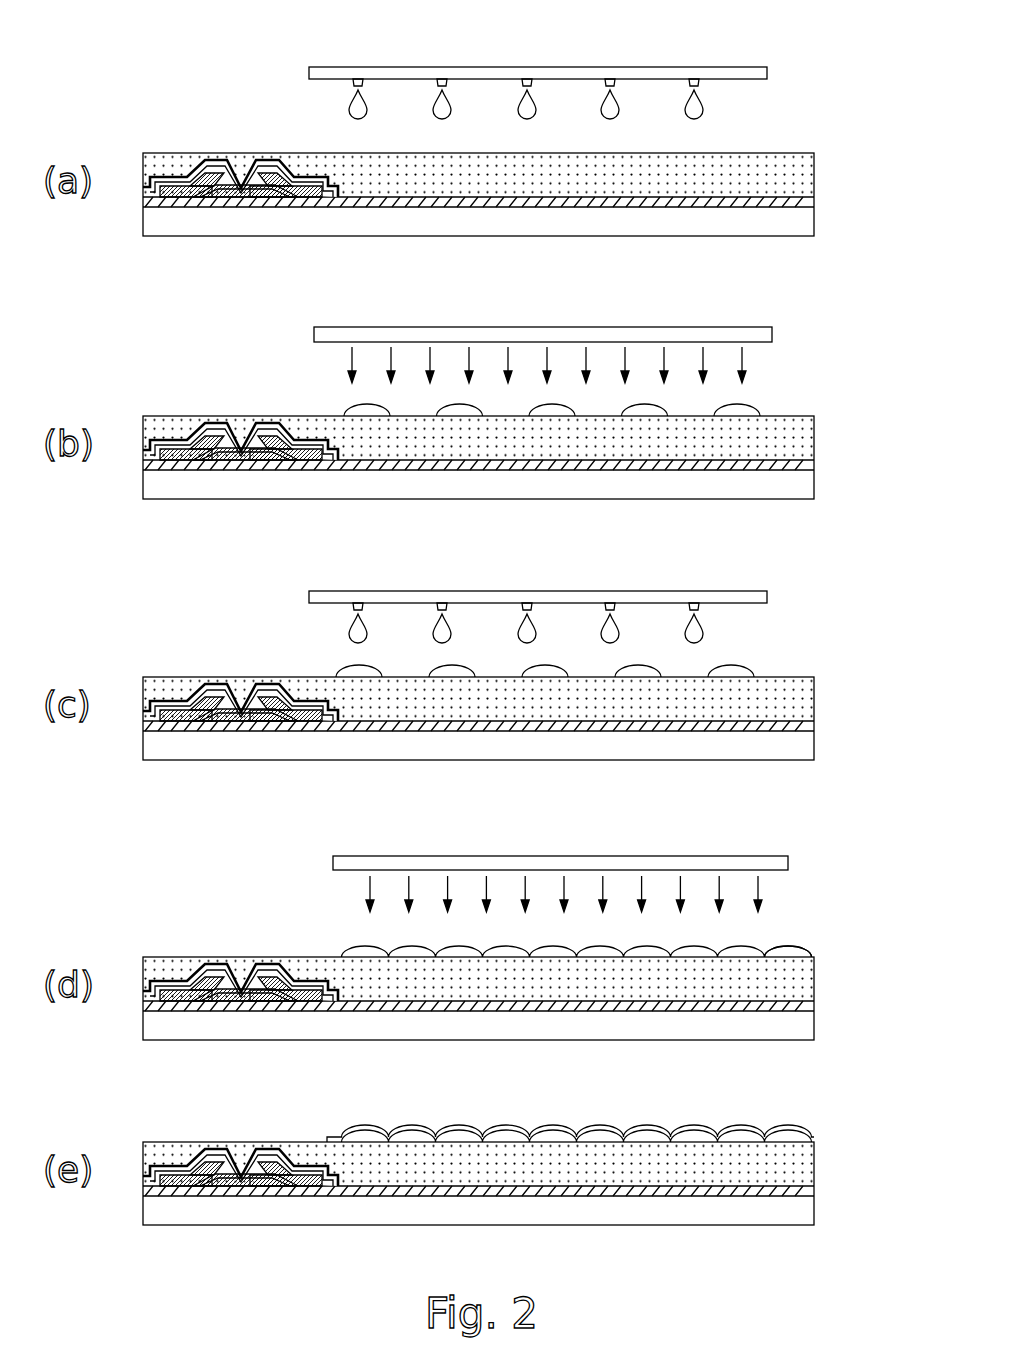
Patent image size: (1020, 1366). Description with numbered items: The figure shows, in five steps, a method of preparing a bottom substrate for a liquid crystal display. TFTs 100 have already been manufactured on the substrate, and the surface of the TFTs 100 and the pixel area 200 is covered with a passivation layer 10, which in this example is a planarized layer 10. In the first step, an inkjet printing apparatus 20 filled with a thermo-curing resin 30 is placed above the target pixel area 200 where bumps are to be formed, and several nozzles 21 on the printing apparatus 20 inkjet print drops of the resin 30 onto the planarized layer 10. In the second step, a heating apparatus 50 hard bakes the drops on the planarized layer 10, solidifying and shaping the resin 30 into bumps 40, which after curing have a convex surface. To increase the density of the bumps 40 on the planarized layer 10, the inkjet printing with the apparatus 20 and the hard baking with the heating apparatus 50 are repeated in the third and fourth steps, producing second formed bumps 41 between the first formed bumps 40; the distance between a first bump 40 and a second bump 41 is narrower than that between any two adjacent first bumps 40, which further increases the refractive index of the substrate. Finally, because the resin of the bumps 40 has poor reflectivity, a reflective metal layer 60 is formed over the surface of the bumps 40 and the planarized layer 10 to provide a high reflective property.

The passivation layer 10 is at (803, 182).
The inkjet printing apparatus 20 is at (647, 68).
The nozzles 21 is at (696, 86).
The resin 30 is at (360, 110).
The bumps 40 is at (740, 408).
The second formed bumps 41 is at (797, 955).
The heating apparatus 50 is at (768, 334).
The reflective metal layer 60 is at (818, 1137).
The TFTs 100 is at (185, 148).
The pixel area 200 is at (806, 148).